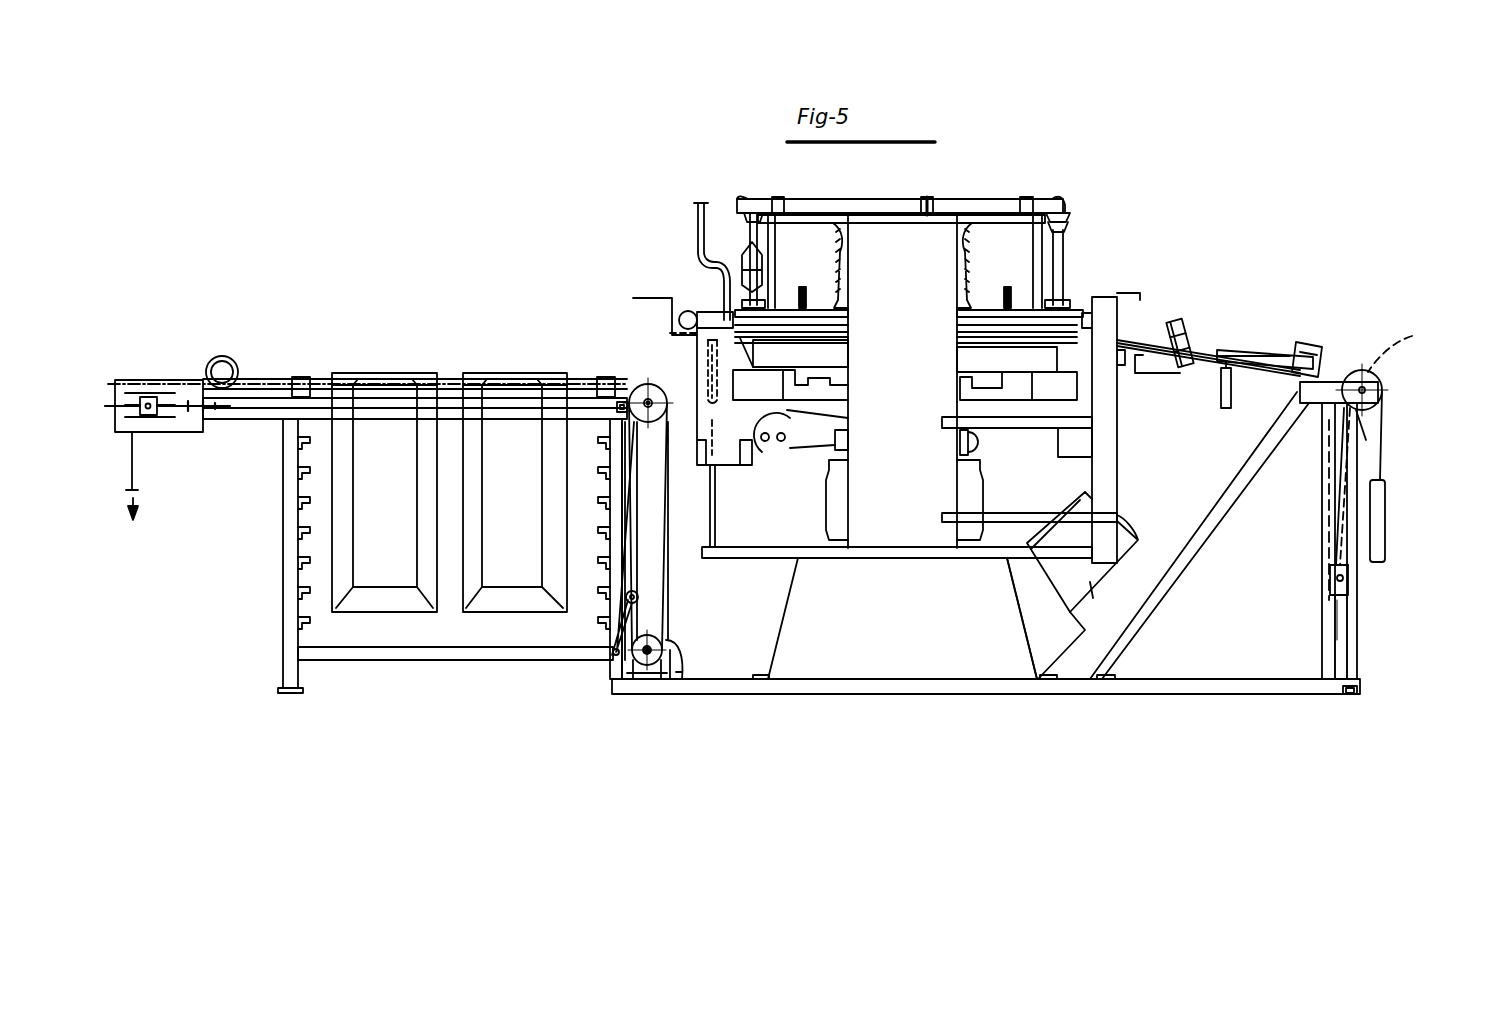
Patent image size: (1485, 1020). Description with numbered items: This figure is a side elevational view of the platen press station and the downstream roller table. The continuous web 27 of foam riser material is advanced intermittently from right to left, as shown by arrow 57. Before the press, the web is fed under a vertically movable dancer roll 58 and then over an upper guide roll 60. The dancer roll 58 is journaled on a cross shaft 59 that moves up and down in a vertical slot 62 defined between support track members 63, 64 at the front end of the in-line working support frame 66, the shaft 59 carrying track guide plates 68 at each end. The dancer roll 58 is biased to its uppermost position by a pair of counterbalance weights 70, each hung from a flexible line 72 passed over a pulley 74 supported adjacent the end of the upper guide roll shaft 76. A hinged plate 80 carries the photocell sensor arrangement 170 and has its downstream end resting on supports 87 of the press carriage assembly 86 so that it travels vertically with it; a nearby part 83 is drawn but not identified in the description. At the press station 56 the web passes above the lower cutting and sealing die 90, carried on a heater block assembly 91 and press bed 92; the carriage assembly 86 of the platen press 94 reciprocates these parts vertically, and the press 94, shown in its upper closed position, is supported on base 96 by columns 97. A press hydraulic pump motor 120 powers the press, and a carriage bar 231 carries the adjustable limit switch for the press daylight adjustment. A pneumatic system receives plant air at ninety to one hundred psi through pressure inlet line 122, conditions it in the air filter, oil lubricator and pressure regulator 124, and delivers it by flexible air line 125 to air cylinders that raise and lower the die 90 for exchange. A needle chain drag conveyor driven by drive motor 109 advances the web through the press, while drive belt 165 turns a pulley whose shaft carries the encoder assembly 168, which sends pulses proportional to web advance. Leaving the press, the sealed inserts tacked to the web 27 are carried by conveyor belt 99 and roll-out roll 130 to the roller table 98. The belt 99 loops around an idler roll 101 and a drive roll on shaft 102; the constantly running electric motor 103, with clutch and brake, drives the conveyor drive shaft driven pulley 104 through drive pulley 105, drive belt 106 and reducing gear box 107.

The web 27 is at (132, 468).
The press station 56 is at (957, 186).
The arrow 57 is at (1455, 630).
The dancer roll 58 is at (1325, 585).
The cross shaft 59 is at (1350, 582).
The upper guide roll 60 is at (1406, 343).
The vertical slot 62 is at (1345, 661).
The support track member 63 is at (1323, 633).
The support track member 64 is at (1355, 638).
The in-line working support frame 66 is at (1176, 678).
The track guide plates 68 is at (1350, 573).
The counterbalance weights 70 is at (1387, 519).
The flexible line 72 is at (1383, 456).
The pulley 74 is at (1364, 410).
The upper guide roll shaft 76 is at (1366, 390).
The hinged plate 80 is at (1212, 385).
The lever bar 83 is at (1305, 343).
The press carriage assembly 86 is at (1118, 498).
The supports 87 is at (1118, 338).
The lower cutting and sealing die 90 is at (1037, 366).
The heater block assembly 91 is at (1082, 390).
The press bed 92 is at (988, 313).
The platen press 94 is at (790, 577).
The base 96 is at (786, 608).
The columns 97 is at (868, 508).
The roller table 98 is at (455, 660).
The conveyor belt 99 is at (178, 383).
The idler roll 101 is at (153, 392).
The shaft 102 is at (684, 354).
The electric motor 103 is at (668, 636).
The conveyor drive shaft driven pulley 104 is at (640, 391).
The drive pulley 105 is at (650, 666).
The drive belt 106 is at (668, 542).
The reducing gear box 107 is at (674, 664).
The drive motor 109 is at (775, 448).
The press hydraulic pump motor 120 is at (1096, 592).
The pressure inlet line 122 is at (697, 209).
The air filter, oil lubricator and pressure regulator 124 is at (742, 275).
The flexible air line 125 is at (712, 290).
The roll-out roll 130 is at (236, 373).
The drive belt 165 is at (826, 452).
The encoder assembly 168 is at (978, 451).
The photocell sensor arrangement 170 is at (1199, 322).
The carriage bar 231 is at (1102, 500).